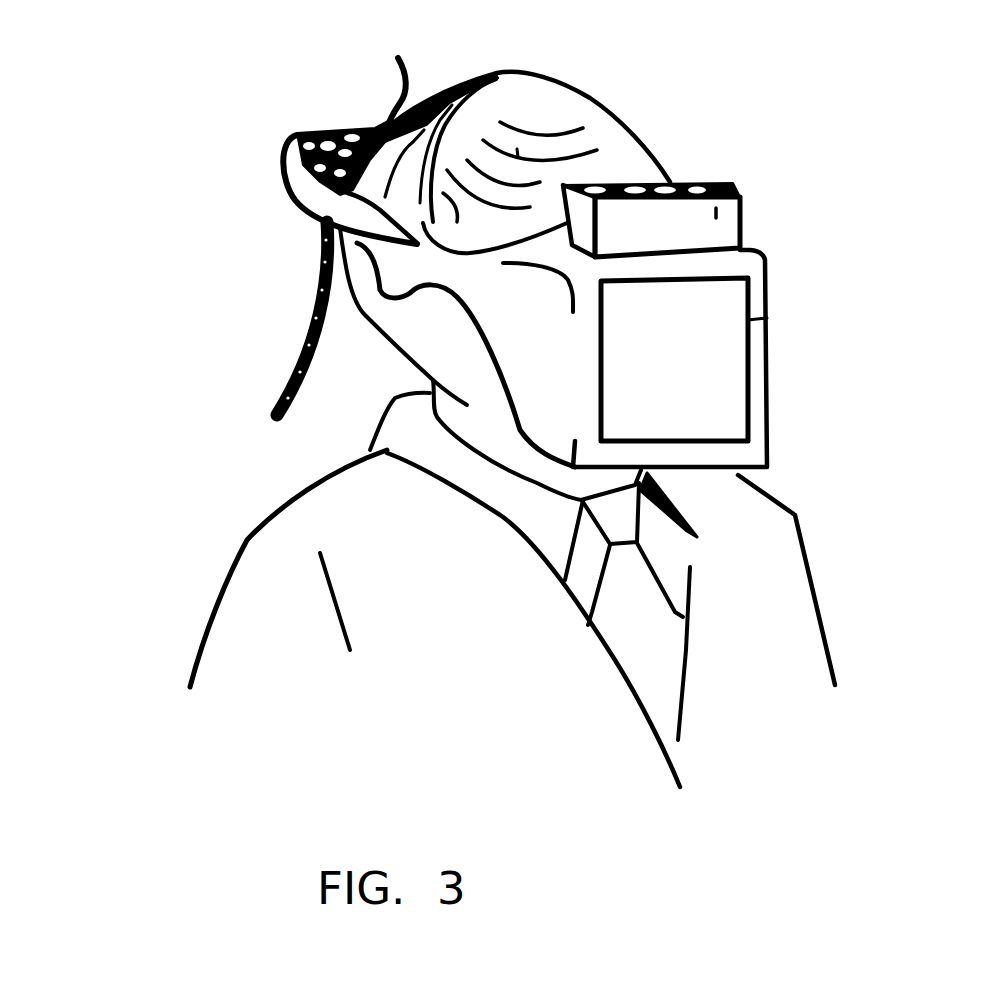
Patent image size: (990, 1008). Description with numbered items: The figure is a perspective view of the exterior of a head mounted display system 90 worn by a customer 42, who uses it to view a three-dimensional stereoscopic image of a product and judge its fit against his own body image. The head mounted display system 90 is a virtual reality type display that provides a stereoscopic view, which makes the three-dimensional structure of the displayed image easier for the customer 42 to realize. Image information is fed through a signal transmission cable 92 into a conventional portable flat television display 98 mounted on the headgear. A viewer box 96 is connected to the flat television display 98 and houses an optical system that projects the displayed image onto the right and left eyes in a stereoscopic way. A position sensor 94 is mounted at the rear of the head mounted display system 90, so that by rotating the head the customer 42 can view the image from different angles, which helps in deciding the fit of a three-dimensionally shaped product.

The customer 42 is at (593, 113).
The head mounted display system 90 is at (253, 158).
The signal transmission cable 92 is at (303, 326).
The position sensor 94 is at (394, 74).
The viewer box 96 is at (767, 311).
The portable flat television display 98 is at (718, 187).